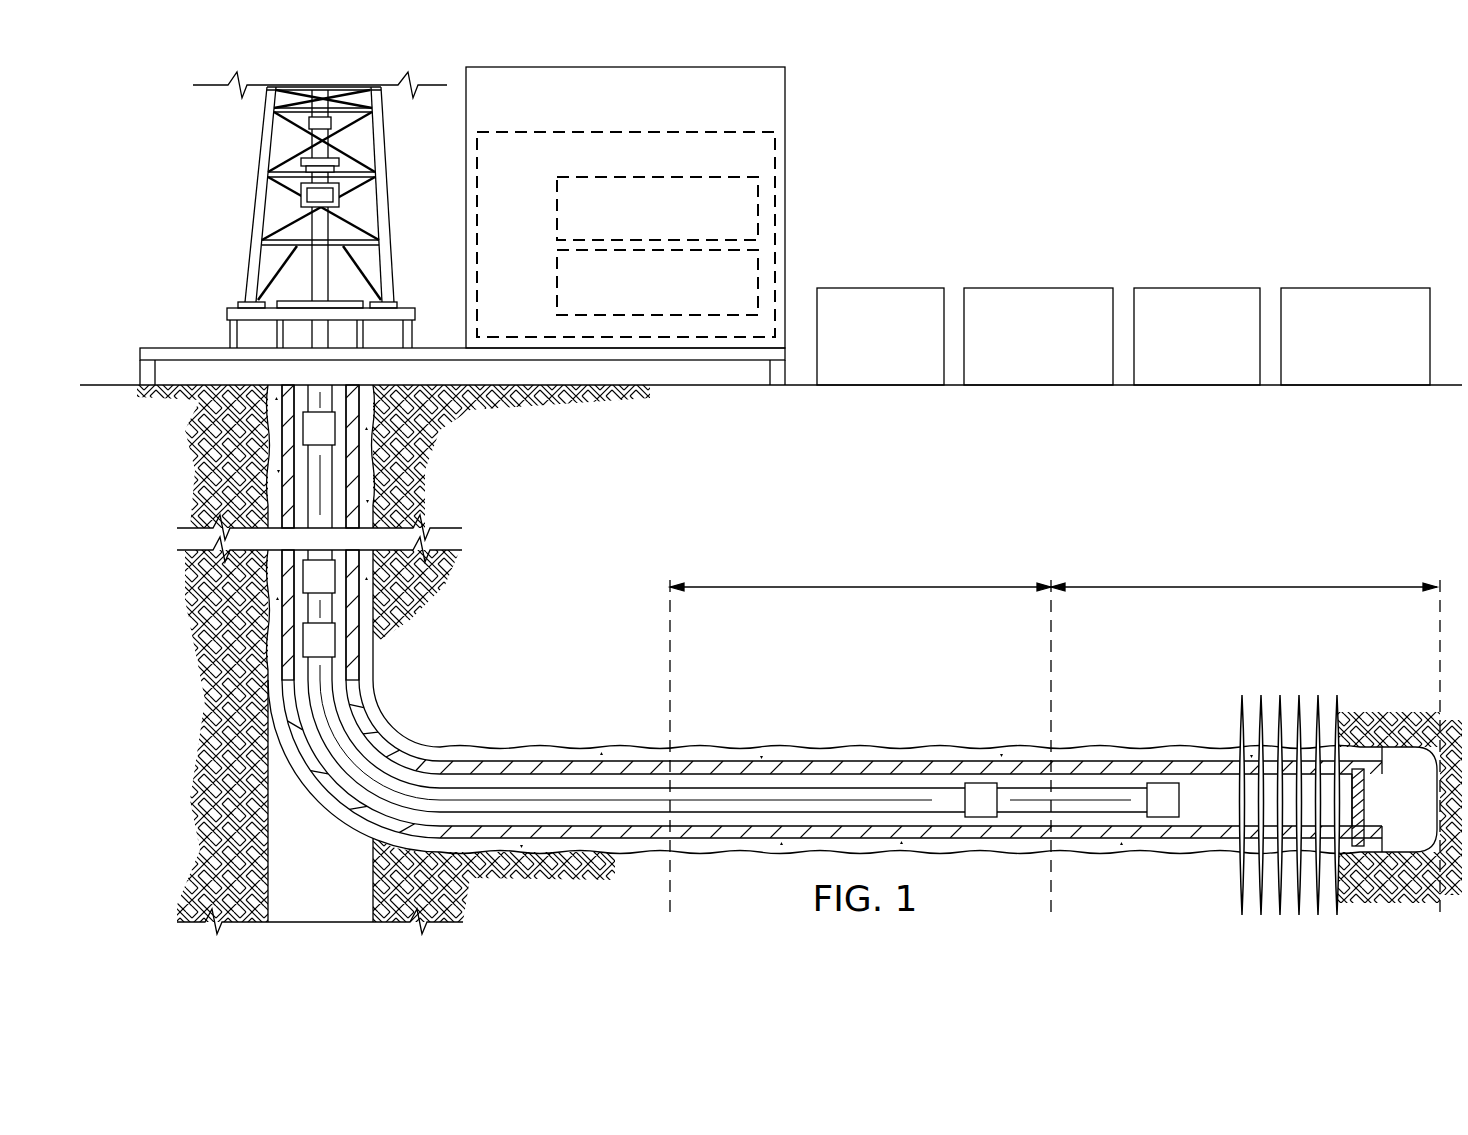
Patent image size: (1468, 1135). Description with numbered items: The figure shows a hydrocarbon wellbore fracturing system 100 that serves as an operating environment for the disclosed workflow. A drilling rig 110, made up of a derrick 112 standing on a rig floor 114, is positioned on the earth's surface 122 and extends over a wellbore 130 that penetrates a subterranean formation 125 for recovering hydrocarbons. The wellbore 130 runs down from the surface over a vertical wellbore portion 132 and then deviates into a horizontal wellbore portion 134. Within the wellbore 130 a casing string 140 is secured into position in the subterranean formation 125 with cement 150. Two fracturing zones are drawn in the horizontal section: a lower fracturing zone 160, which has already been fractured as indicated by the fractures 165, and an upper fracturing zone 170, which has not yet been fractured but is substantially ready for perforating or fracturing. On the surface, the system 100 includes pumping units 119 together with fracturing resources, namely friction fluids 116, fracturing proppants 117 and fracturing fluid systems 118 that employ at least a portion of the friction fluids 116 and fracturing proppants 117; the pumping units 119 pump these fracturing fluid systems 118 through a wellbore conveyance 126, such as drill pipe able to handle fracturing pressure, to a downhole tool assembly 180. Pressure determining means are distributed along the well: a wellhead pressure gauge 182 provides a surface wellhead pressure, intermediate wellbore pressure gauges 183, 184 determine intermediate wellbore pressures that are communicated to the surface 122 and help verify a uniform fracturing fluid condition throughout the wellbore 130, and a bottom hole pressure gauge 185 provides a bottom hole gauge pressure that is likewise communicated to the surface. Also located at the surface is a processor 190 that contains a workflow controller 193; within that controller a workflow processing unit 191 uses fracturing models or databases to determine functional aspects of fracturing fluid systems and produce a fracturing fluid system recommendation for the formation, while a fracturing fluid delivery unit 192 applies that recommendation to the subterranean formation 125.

The hydrocarbon wellbore fracturing system 100 is at (982, 131).
The drilling rig 110 is at (280, 210).
The derrick 112 is at (251, 205).
The rig floor 114 is at (190, 347).
The friction fluids 116 is at (1198, 288).
The fracturing proppants 117 is at (1355, 288).
The fracturing fluid systems 118 is at (1040, 288).
The pumping units 119 is at (880, 288).
The earth's surface 122 is at (115, 385).
The subterranean formation 125 is at (508, 400).
The wellbore conveyance 126 is at (310, 482).
The wellbore 130 is at (272, 450).
The vertical wellbore portion 132 is at (302, 602).
The horizontal wellbore portion 134 is at (1401, 764).
The casing string 140 is at (510, 788).
The cement 150 is at (600, 750).
The lower fracturing zone 160 is at (1245, 585).
The fractures 165 is at (1328, 715).
The upper fracturing zone 170 is at (862, 585).
The downhole tool assembly 180 is at (890, 678).
The wellhead pressure gauge 182 is at (335, 422).
The wellbore pressure gauge WP1 183 is at (335, 580).
The wellbore pressure gauge WPn 184 is at (303, 637).
The bottom hole pressure gauge 185 is at (980, 783).
The processor 190 is at (664, 207).
The workflow processing unit 191 is at (557, 207).
The fracturing fluid delivery unit 192 is at (557, 282).
The workflow controller 193 is at (712, 128).